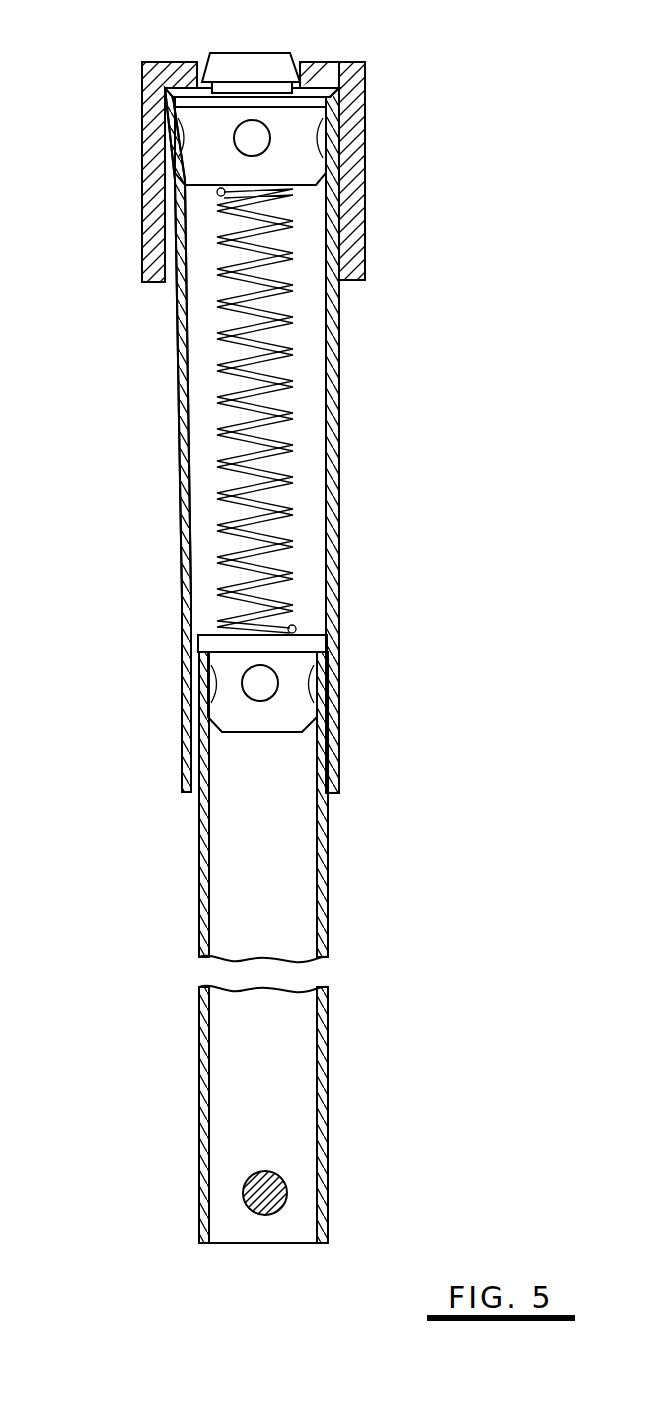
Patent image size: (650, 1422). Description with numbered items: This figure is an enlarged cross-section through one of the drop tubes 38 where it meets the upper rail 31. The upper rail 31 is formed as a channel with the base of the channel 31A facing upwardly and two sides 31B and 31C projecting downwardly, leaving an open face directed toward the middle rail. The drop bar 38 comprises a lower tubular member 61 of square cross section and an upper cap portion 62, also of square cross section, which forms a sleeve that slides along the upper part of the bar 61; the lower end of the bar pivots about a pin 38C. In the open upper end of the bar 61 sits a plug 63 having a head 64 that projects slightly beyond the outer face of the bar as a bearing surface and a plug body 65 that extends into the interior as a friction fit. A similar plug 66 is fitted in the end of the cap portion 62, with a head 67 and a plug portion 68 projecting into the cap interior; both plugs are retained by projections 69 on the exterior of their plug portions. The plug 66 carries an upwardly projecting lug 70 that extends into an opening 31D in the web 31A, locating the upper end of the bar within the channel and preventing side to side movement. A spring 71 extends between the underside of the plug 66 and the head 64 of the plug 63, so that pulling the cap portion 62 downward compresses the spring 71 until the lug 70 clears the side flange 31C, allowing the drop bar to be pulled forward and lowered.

The upper rail 31 is at (247, 142).
The base of the channel 31A is at (175, 54).
The side of the channel 31B is at (143, 200).
The side of the channel 31C is at (366, 222).
The opening 31D is at (300, 60).
The lug 70 is at (240, 70).
The plug 66 is at (268, 42).
The head 67 is at (330, 100).
The plug portion 68 is at (330, 170).
The projections 69 is at (252, 140).
The spring 71 is at (318, 418).
The cap portion 62 is at (352, 520).
The plug 63 is at (318, 622).
The head 64 is at (206, 638).
The plug body 65 is at (218, 702).
The drop tube 38 is at (301, 932).
The lower tubular member 61 is at (333, 1085).
The pin 38C is at (282, 1180).